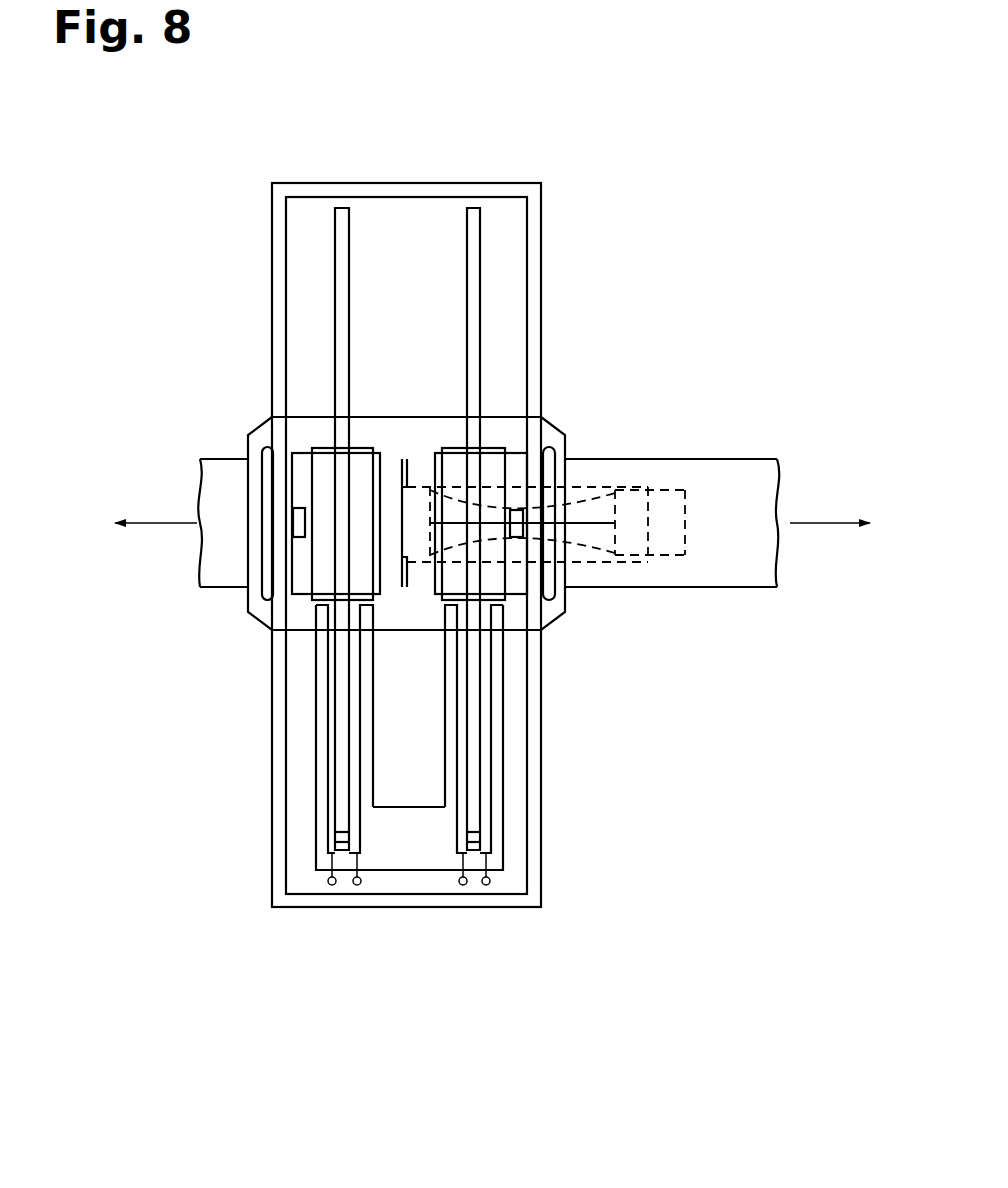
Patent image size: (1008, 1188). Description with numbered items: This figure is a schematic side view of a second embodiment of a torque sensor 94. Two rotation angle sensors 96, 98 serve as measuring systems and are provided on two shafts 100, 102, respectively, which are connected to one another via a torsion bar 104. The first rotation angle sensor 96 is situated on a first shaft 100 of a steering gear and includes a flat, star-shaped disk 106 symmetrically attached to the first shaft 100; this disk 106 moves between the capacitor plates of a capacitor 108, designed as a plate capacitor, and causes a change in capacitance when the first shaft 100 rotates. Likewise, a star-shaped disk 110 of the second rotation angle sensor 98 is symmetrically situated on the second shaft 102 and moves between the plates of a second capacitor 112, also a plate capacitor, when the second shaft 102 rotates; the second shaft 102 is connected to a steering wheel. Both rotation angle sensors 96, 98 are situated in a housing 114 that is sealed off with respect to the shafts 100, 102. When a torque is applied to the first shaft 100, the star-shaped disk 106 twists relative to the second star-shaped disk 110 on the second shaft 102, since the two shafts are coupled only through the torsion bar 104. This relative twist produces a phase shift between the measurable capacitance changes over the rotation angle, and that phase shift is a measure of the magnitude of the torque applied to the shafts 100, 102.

The torque sensor 94 is at (177, 291).
The first rotation angle sensor 96 is at (336, 917).
The second rotation angle sensor 98 is at (482, 917).
The first shaft 100 is at (225, 565).
The second shaft 102 is at (735, 483).
The torsion bar 104 is at (596, 512).
The star-shaped disk 106 is at (337, 262).
The capacitor 108 is at (312, 802).
The star-shaped disk 110 is at (483, 265).
The second capacitor 112 is at (508, 792).
The housing 114 is at (423, 183).